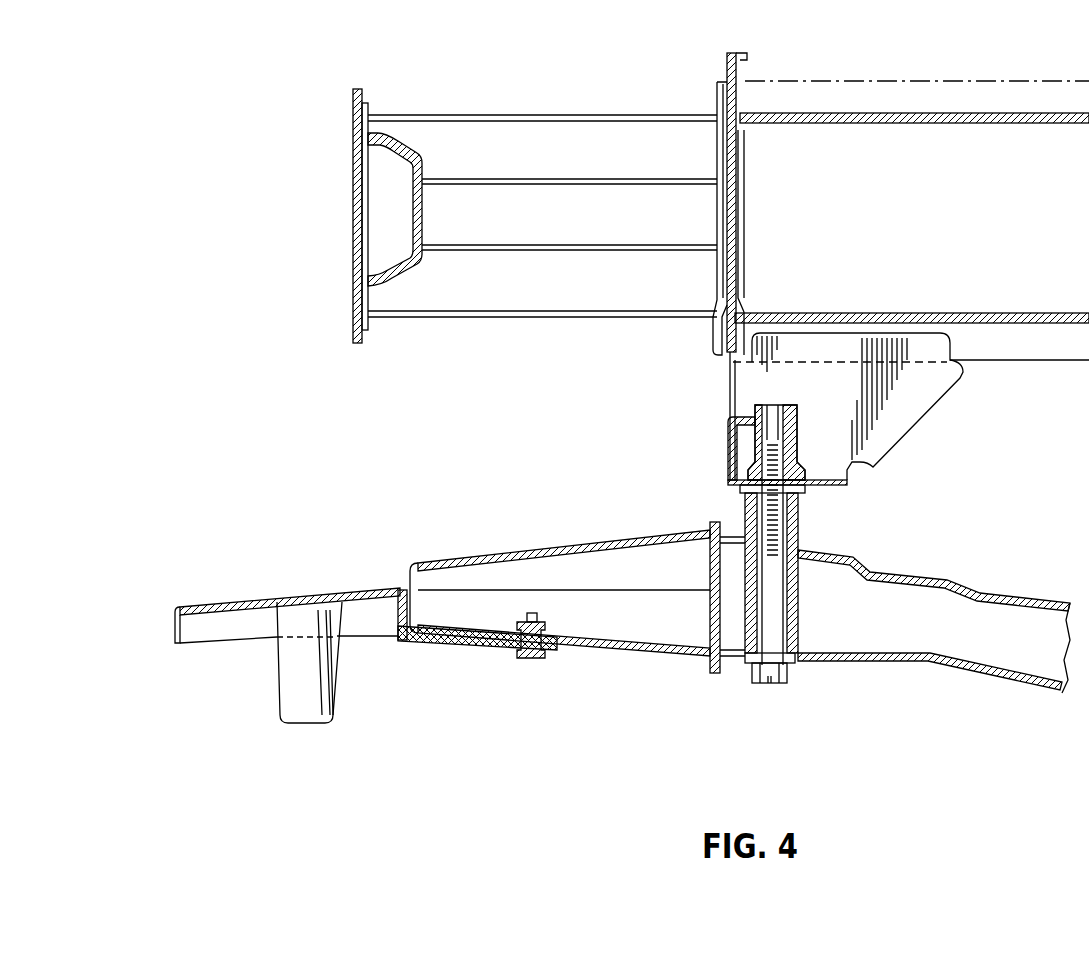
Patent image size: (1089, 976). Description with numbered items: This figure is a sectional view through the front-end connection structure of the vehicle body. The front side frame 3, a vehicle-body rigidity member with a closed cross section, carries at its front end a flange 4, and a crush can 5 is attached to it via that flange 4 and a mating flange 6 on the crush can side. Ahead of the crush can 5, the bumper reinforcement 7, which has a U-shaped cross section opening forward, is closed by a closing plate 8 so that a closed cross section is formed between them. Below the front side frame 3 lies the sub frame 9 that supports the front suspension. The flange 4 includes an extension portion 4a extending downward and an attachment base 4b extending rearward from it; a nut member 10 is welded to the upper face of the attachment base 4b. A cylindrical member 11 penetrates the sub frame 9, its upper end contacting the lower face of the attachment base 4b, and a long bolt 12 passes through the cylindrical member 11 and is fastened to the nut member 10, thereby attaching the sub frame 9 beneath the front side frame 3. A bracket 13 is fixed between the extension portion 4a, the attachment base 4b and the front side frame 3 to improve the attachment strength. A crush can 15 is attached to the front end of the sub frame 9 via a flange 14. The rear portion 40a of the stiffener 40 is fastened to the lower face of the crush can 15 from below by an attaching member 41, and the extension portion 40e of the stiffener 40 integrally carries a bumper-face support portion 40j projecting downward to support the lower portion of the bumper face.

The front side frame 3 is at (935, 113).
The flange 4 is at (750, 275).
The extension portion 4a is at (727, 447).
The attachment base 4b is at (813, 485).
The crush can 5 is at (557, 115).
The flange 6 is at (725, 100).
The bumper reinforcement 7 is at (428, 160).
The closing plate 8 is at (353, 223).
The sub frame 9 is at (997, 595).
The nut member 10 is at (800, 437).
The cylindrical member 11 is at (798, 617).
The long bolt 12 is at (780, 683).
The bracket 13 is at (913, 417).
The flange 14 is at (710, 630).
The crush can 15 is at (543, 550).
The stiffener 40 is at (366, 627).
The rear portion 40a is at (468, 643).
The extension portion 40e is at (320, 588).
The bumper-face support portion 40j is at (277, 707).
The attaching member 41 is at (527, 660).